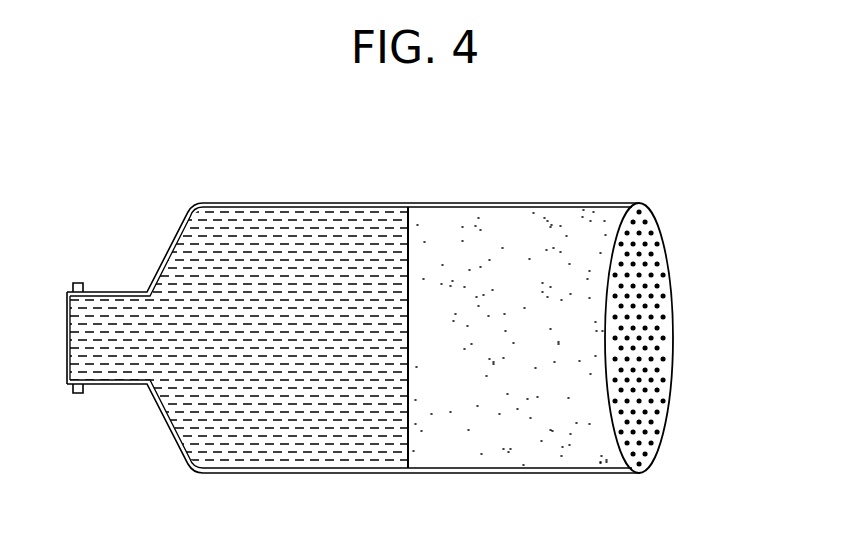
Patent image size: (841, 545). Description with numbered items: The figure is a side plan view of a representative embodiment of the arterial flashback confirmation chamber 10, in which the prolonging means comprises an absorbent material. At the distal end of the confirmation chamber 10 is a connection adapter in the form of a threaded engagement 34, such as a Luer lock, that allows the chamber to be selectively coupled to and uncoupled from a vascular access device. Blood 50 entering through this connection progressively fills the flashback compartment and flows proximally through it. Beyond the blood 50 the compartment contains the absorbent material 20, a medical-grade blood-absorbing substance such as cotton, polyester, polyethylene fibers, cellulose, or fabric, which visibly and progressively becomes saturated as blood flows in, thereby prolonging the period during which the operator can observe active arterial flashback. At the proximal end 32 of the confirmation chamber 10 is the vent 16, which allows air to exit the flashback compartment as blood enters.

The arterial flashback confirmation chamber 10 is at (571, 177).
The vent 16 is at (646, 398).
The absorbent material 20 is at (473, 230).
The proximal end 32 is at (683, 312).
The threaded engagement 34 is at (79, 283).
The blood 50 is at (269, 227).